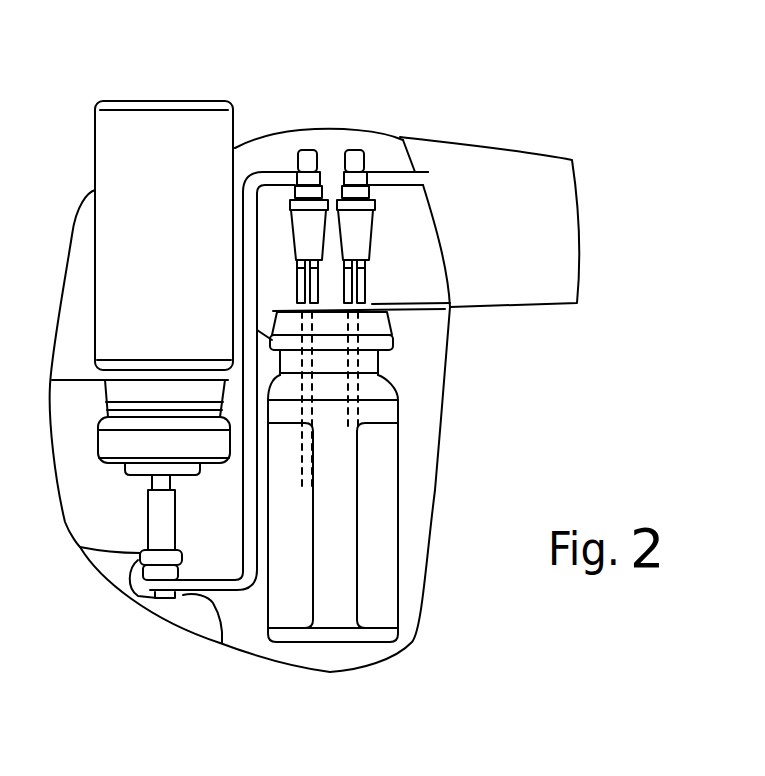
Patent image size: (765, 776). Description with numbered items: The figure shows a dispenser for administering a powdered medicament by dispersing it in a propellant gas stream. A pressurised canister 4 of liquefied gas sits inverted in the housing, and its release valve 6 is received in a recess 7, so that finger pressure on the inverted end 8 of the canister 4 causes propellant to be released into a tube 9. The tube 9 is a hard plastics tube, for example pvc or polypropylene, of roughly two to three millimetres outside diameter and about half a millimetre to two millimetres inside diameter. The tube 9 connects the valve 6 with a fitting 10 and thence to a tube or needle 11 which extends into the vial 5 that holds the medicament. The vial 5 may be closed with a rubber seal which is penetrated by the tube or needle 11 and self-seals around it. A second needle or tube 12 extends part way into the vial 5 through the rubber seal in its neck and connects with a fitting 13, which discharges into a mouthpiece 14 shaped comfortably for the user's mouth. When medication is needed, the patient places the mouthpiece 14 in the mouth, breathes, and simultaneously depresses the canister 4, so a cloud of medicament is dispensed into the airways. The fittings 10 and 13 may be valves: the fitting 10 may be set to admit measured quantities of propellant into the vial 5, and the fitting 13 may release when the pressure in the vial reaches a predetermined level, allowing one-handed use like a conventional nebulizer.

The canister 4 is at (110, 148).
The vial 5 is at (378, 588).
The release valve 6 is at (155, 527).
The recess 7 is at (140, 593).
The inverted end 8 is at (154, 93).
The tube 9 is at (245, 527).
The fitting 10 is at (305, 150).
The tube or needle 11 is at (310, 480).
The second needle or tube 12 is at (368, 362).
The fitting 13 is at (353, 150).
The mouthpiece 14 is at (547, 273).